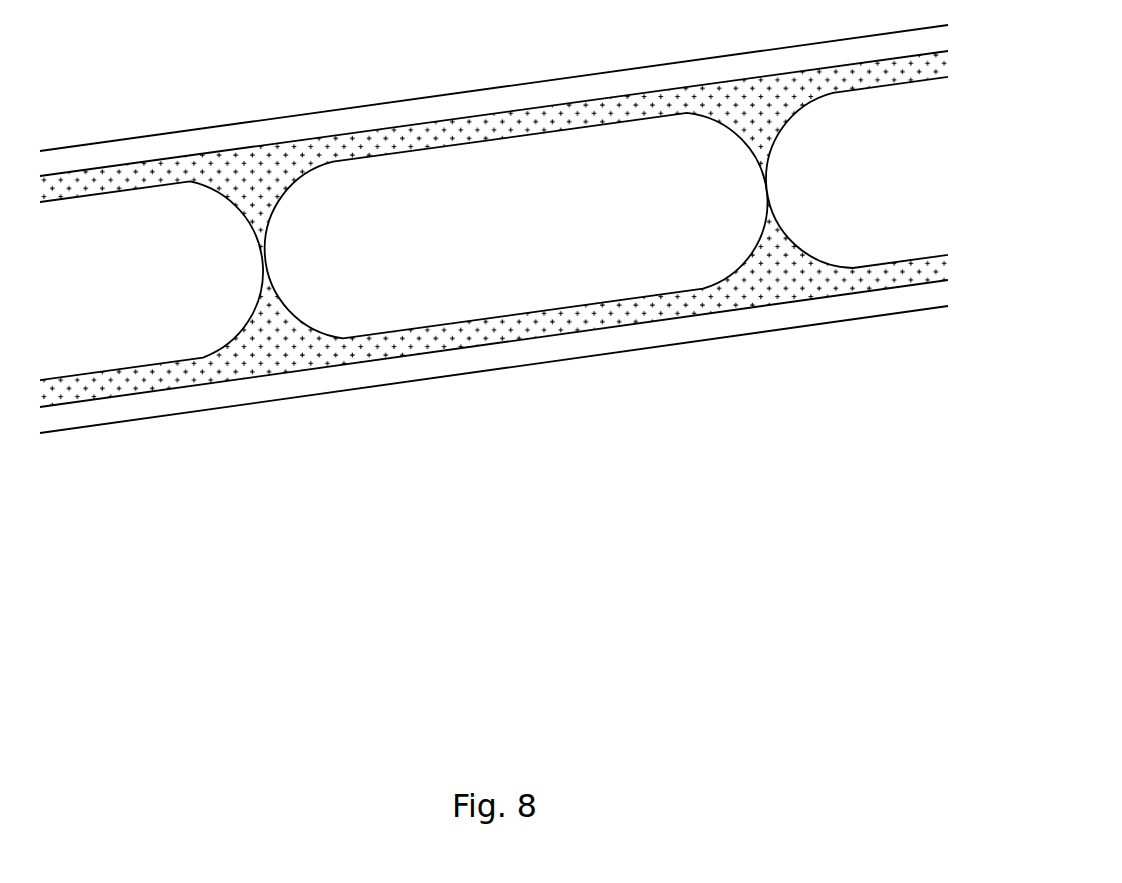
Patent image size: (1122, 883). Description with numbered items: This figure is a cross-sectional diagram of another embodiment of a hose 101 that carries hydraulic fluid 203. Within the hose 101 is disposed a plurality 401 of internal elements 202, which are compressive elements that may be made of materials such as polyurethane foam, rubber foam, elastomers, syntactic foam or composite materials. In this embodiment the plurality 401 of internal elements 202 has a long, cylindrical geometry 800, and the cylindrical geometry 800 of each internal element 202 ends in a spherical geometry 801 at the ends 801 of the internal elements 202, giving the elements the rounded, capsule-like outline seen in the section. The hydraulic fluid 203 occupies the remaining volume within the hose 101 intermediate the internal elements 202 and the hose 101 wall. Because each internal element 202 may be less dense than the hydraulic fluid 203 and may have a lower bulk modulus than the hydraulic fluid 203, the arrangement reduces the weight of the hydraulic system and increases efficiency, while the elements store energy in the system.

The hose 101 is at (498, 100).
The hydraulic fluid 203 is at (244, 168).
The plurality of internal elements 401 is at (292, 154).
The internal element 202 is at (662, 143).
The spherical geometry at the ends 801 is at (750, 240).
The cylindrical geometry 800 is at (522, 310).